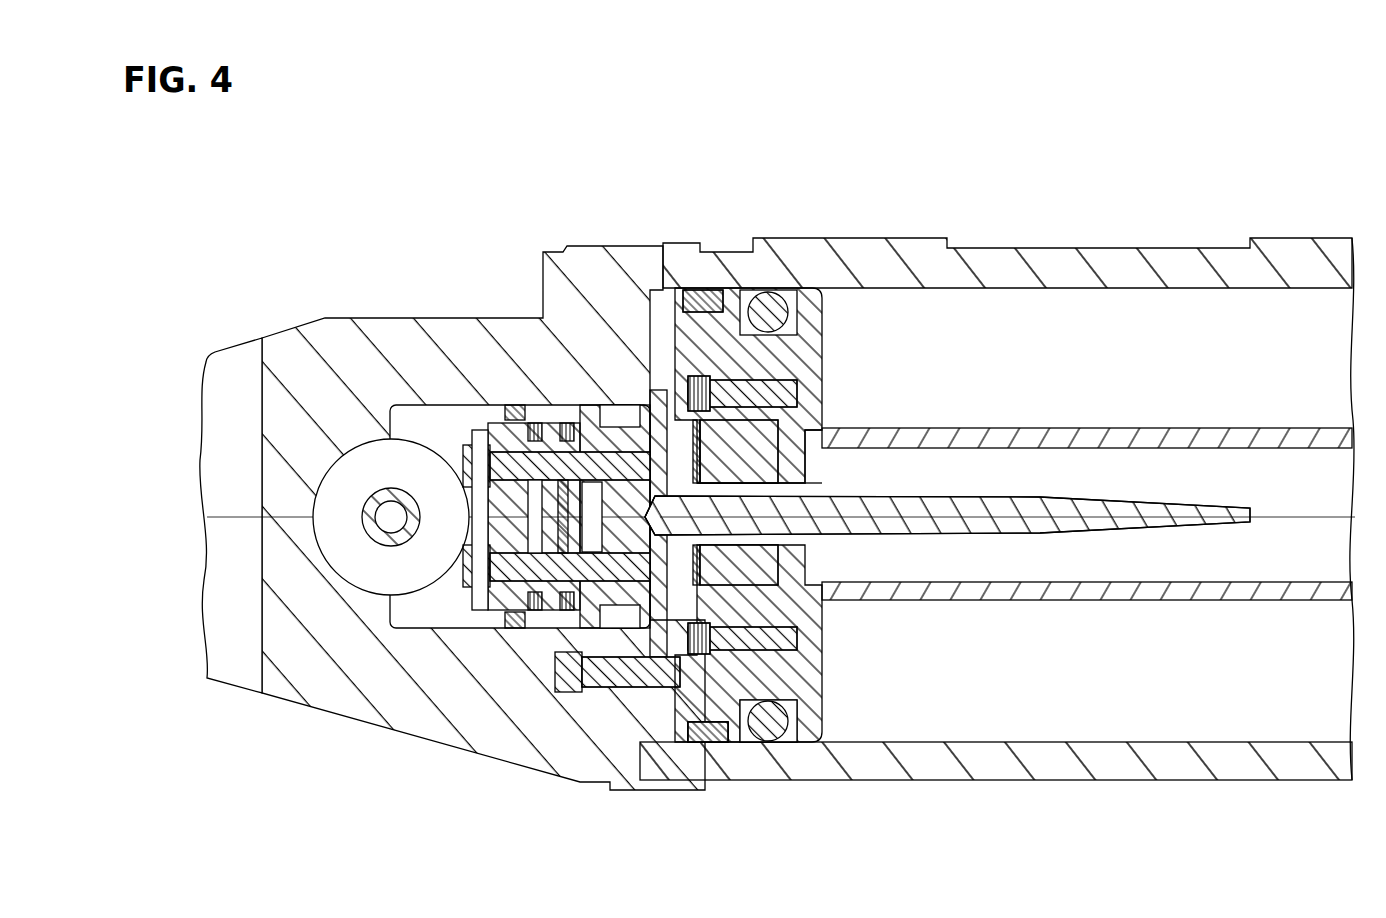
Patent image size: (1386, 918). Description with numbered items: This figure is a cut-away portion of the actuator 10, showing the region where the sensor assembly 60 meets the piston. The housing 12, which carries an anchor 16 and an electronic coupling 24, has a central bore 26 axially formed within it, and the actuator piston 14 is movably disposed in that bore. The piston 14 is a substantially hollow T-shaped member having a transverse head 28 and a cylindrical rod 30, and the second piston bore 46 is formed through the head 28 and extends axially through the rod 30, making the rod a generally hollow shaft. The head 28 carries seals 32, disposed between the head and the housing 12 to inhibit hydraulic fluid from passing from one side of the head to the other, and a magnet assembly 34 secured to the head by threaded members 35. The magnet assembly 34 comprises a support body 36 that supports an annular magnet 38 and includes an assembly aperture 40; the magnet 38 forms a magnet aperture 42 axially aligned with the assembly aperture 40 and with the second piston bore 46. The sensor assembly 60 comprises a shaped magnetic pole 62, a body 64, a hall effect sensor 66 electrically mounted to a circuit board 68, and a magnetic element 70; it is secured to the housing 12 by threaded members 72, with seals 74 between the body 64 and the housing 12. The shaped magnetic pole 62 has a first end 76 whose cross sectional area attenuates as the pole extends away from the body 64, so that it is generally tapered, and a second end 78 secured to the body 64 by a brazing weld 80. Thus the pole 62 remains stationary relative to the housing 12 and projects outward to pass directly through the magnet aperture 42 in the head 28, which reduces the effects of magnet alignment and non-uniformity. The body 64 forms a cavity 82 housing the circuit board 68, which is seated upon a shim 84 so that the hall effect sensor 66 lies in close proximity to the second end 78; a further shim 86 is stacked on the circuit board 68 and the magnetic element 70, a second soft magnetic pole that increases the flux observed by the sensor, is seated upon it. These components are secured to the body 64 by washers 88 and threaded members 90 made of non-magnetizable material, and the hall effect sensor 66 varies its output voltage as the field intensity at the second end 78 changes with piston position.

The actuator 10 is at (988, 80).
The housing 12 is at (991, 246).
The actuator piston 14 is at (1128, 600).
The anchor 16 is at (247, 627).
The electronic coupling 24 is at (340, 478).
The central bore 26 is at (1135, 330).
The head 28 is at (815, 345).
The rod 30 is at (1088, 440).
The seals 32 is at (765, 300).
The magnet assembly 34 is at (815, 462).
The threaded members 35 is at (700, 380).
The support body 36 is at (748, 452).
The magnet 38 is at (760, 445).
The assembly aperture 40 is at (805, 547).
The magnet aperture 42 is at (753, 488).
The second piston bore 46 is at (1237, 462).
The sensor assembly 60 is at (483, 627).
The shaped magnetic pole 62 is at (930, 498).
The body 64 is at (580, 630).
The hall effect sensor 66 is at (623, 430).
The circuit board 68 is at (598, 430).
The magnetic element 70 is at (497, 420).
The threaded members 72 is at (603, 683).
The seals 74 is at (520, 410).
The first end 76 is at (1205, 548).
The second end 78 is at (648, 524).
The brazing weld 80 is at (704, 636).
The cavity 82 is at (473, 432).
The shim 84 is at (567, 623).
The further shim 86 is at (538, 618).
The washers 88 is at (453, 577).
The threaded members 90 is at (465, 604).